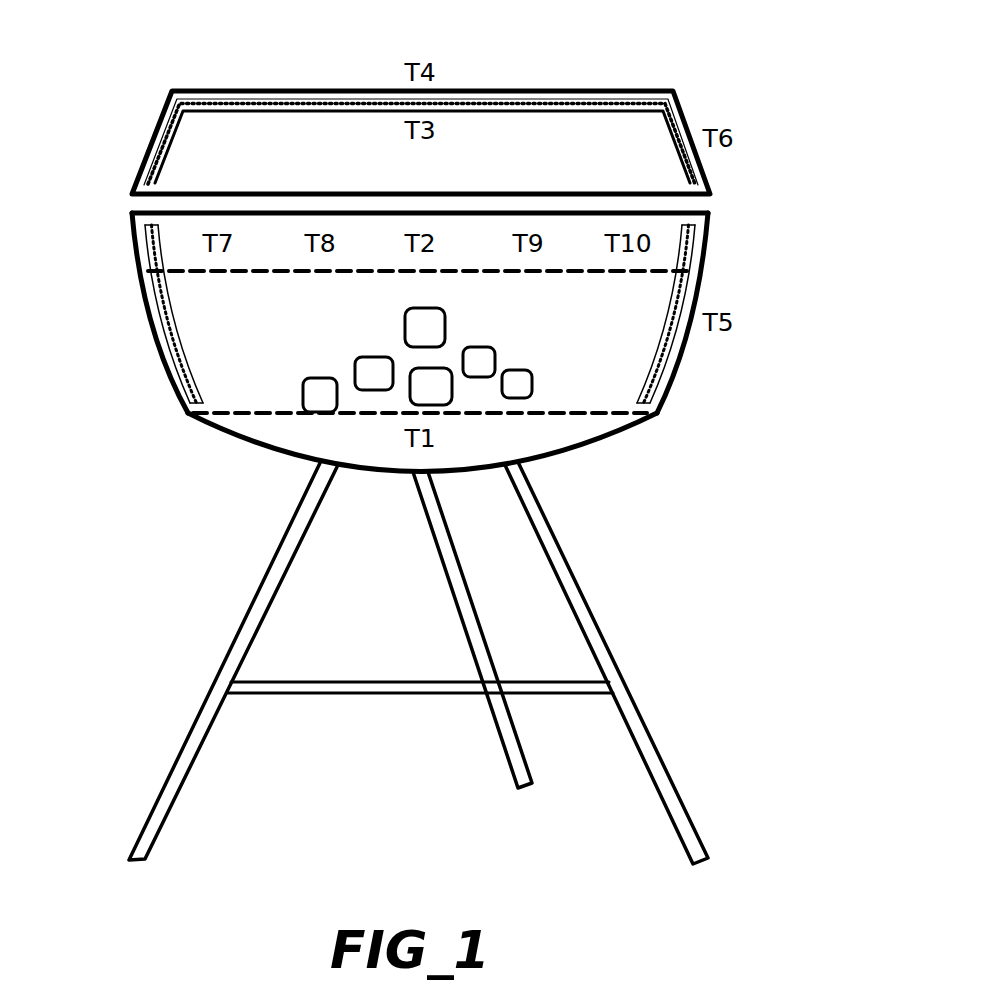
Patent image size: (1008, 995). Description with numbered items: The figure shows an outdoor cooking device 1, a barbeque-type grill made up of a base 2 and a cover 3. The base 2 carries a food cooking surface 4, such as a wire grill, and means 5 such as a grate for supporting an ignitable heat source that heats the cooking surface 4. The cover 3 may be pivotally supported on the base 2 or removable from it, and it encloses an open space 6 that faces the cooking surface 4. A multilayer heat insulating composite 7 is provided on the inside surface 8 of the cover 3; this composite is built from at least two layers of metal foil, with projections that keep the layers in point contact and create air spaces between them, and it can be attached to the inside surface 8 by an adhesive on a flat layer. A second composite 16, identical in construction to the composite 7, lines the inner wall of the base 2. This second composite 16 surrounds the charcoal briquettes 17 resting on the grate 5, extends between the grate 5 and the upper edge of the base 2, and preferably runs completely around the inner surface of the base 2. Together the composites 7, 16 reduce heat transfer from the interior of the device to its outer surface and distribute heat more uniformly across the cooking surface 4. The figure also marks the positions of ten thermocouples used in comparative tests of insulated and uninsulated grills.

The outdoor cooking device 1 is at (117, 192).
The base 2 is at (147, 317).
The cover 3 is at (202, 90).
The food cooking surface 4 is at (572, 272).
The means for supporting an ignitable heat source 5 is at (282, 415).
The open space 6 is at (327, 147).
The multilayer heat insulating composite 7 is at (635, 98).
The inside surface 8 is at (517, 97).
The second composite 16 is at (672, 363).
The charcoal briquettes 17 is at (297, 383).